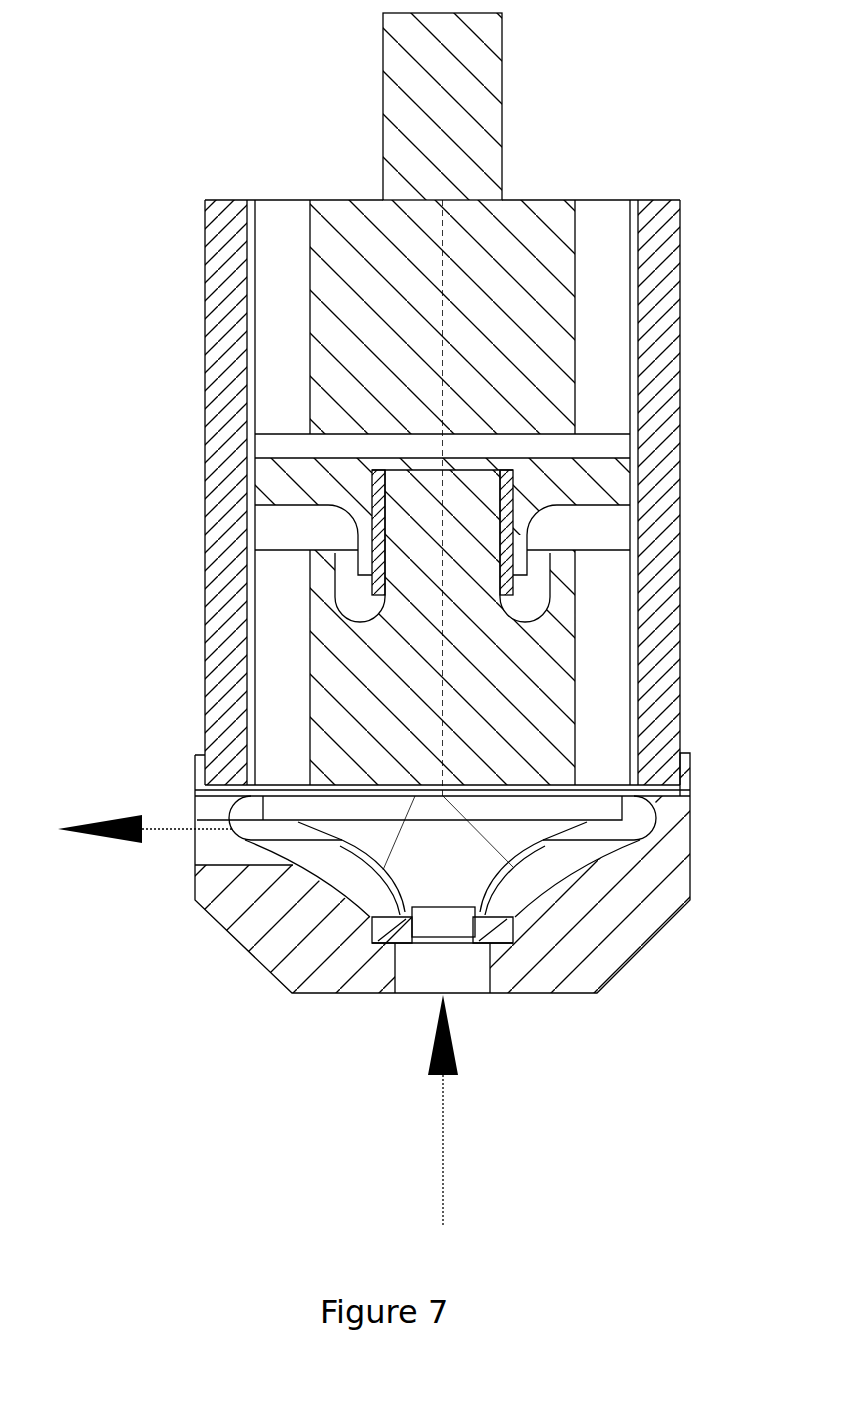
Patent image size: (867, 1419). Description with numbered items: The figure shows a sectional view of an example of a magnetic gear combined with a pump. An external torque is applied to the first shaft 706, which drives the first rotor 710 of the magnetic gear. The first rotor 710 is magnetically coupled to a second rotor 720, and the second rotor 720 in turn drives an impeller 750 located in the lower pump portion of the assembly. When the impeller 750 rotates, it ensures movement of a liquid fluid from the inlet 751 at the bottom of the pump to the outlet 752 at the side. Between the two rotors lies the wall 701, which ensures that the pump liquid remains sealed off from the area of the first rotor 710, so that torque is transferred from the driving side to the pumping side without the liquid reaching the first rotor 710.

The first shaft 706 is at (367, 150).
The wall 701 is at (273, 490).
The first rotor 710 is at (442, 317).
The second rotor 720 is at (442, 627).
The impeller 750 is at (497, 845).
The inlet 751 is at (397, 1111).
The outlet 752 is at (145, 799).